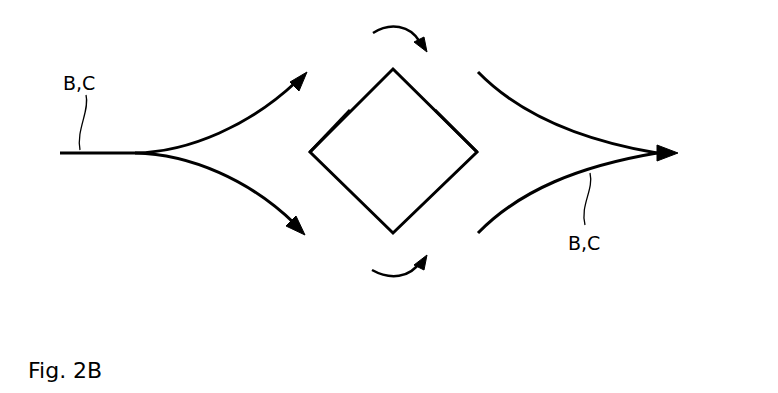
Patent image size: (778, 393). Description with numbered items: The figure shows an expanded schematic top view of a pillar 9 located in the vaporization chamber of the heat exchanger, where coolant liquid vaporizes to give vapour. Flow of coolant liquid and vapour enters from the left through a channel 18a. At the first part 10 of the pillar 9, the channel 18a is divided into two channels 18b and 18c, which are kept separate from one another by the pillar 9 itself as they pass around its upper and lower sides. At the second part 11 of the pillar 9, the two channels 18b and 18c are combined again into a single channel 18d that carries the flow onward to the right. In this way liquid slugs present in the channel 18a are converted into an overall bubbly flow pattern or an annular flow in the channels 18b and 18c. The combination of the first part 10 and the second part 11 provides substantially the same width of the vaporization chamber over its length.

The pillar 9 is at (400, 163).
The first part 10 is at (327, 133).
The second part 11 is at (456, 118).
The channel 18a is at (100, 170).
The channel 18b is at (350, 82).
The channel 18c is at (348, 232).
The channel 18d is at (632, 140).